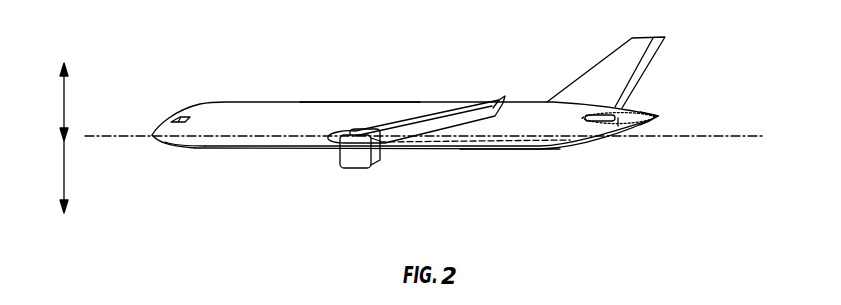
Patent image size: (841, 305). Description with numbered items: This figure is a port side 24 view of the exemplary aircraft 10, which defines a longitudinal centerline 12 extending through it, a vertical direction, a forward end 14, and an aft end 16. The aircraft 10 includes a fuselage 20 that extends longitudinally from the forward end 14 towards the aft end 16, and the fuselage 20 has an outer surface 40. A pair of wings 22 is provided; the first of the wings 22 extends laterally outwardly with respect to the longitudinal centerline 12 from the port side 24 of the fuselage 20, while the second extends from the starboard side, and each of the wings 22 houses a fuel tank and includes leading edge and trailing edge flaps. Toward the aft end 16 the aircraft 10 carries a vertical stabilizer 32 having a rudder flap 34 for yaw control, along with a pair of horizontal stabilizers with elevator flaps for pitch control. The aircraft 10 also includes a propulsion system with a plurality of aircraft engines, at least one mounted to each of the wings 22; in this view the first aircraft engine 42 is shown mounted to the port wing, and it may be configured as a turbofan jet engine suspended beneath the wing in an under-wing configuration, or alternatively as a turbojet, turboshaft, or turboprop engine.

The aircraft 10 is at (193, 60).
The longitudinal centerline 12 is at (125, 135).
The forward end 14 is at (156, 150).
The aft end 16 is at (680, 115).
The fuselage 20 is at (228, 144).
The wings 22 is at (453, 124).
The port side 24 is at (470, 153).
The vertical stabilizer 32 is at (627, 62).
The rudder flap 34 is at (660, 59).
The outer surface 40 is at (343, 97).
The first aircraft engine 42 is at (341, 172).